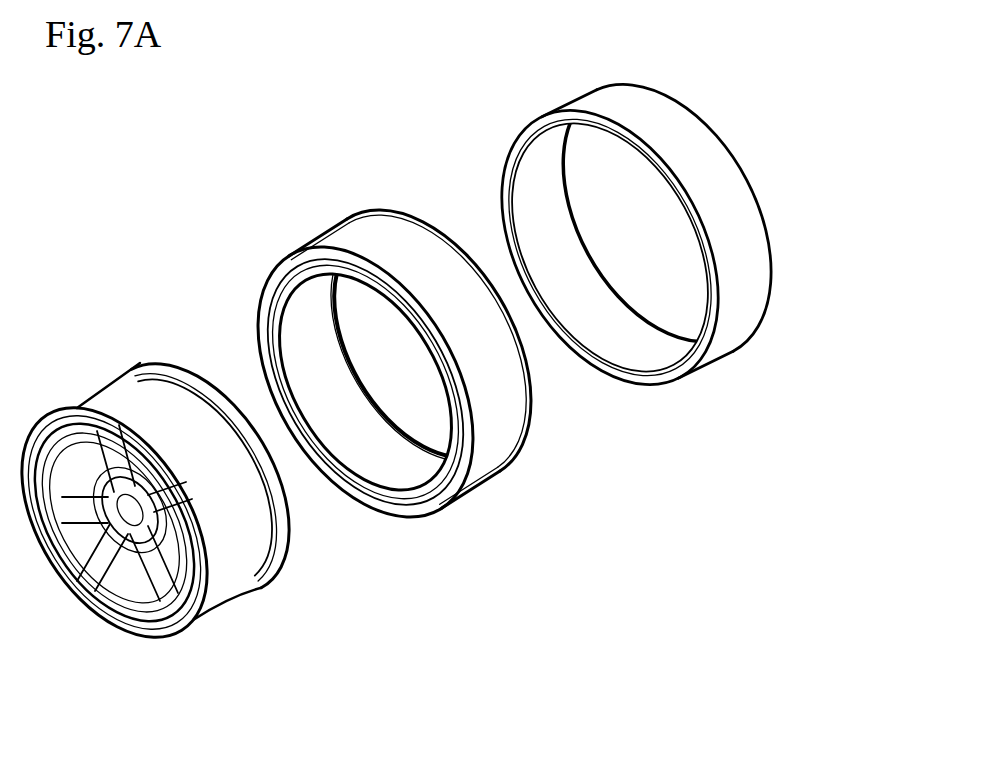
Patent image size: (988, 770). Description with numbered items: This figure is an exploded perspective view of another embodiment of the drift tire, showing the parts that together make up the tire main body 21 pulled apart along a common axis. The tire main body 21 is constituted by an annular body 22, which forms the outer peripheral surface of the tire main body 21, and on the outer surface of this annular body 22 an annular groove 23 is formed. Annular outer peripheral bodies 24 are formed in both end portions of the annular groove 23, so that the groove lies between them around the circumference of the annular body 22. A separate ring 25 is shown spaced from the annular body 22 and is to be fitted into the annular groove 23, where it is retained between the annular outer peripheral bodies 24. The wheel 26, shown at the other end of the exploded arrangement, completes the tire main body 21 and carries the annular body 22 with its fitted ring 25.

The tire main body 21 is at (410, 523).
The annular body 22 is at (333, 243).
The annular groove 23 is at (500, 447).
The annular outer peripheral bodies 24 is at (427, 227).
The ring 25 is at (698, 160).
The wheel 26 is at (143, 640).